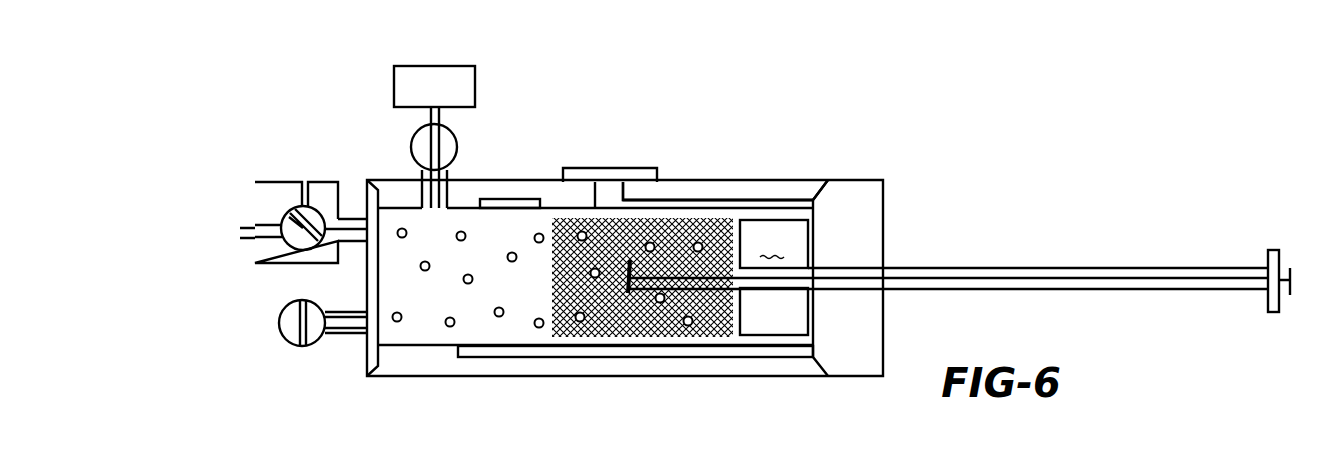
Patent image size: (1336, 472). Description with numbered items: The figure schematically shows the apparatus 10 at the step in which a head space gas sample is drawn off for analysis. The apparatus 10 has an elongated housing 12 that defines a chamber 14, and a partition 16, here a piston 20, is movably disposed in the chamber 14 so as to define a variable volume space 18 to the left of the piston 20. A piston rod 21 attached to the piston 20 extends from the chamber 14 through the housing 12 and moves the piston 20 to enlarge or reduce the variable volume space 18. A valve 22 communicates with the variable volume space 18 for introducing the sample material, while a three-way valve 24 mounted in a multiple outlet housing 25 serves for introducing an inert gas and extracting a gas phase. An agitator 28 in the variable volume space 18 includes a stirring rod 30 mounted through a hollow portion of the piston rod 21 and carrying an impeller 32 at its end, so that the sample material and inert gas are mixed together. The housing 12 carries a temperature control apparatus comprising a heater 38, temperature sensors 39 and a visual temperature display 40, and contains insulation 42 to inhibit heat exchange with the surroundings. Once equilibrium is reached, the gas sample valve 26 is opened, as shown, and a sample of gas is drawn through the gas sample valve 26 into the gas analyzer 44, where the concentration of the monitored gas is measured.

The apparatus 10 is at (903, 170).
The housing 12 is at (733, 363).
The chamber 14 is at (510, 237).
The partition 16 is at (772, 210).
The variable volume space 18 is at (492, 327).
The piston 20 is at (774, 277).
The piston rod 21 is at (1155, 268).
The valve 22 is at (275, 342).
The valve 24 is at (241, 221).
The multiple outlet housing 25 is at (275, 198).
The gas sample valve 26 is at (403, 147).
The agitator 28 is at (665, 254).
The stirring rod 30 is at (947, 277).
The impeller 32 is at (626, 296).
The heater 38 is at (662, 203).
The temperature sensors 39 is at (505, 203).
The visual temperature display 40 is at (603, 180).
The insulation 42 is at (652, 350).
The gas analyzer 44 is at (475, 93).